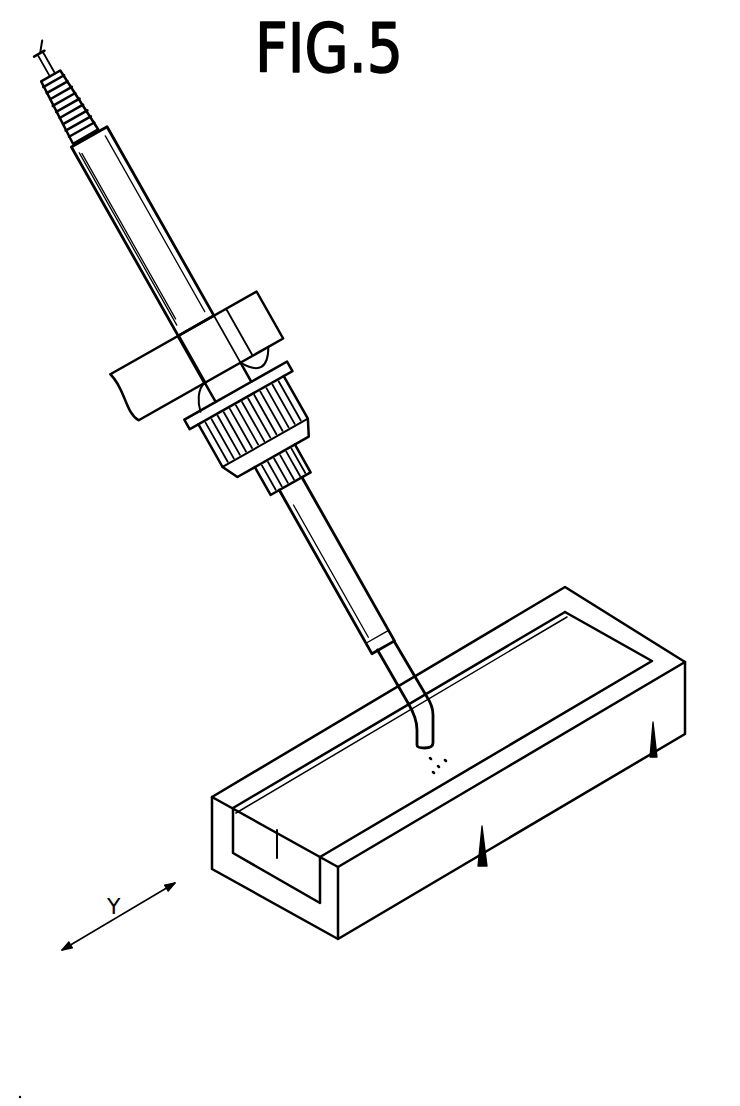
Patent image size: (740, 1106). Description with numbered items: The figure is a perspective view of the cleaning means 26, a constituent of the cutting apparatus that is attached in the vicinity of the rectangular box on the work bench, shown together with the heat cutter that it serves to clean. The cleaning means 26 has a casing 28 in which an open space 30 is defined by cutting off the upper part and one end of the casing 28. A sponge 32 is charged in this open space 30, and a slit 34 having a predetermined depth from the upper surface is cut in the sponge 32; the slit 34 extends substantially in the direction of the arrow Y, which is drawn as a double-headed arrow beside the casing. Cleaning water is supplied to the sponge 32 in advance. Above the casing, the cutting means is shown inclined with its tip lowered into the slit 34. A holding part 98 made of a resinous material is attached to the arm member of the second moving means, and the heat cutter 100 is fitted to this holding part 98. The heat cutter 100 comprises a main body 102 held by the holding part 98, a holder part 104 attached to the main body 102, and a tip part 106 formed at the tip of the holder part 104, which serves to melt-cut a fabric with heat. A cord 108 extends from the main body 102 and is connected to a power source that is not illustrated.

The cleaning means 26 is at (443, 657).
The casing 28 is at (456, 855).
The open space 30 is at (518, 726).
The sponge 32 is at (600, 667).
The slit 34 is at (347, 783).
The holding part 98 is at (250, 323).
The heat cutter 100 is at (182, 257).
The main body 102 is at (143, 252).
The holder part 104 is at (338, 561).
The tip part 106 is at (441, 768).
The cord 108 is at (53, 62).